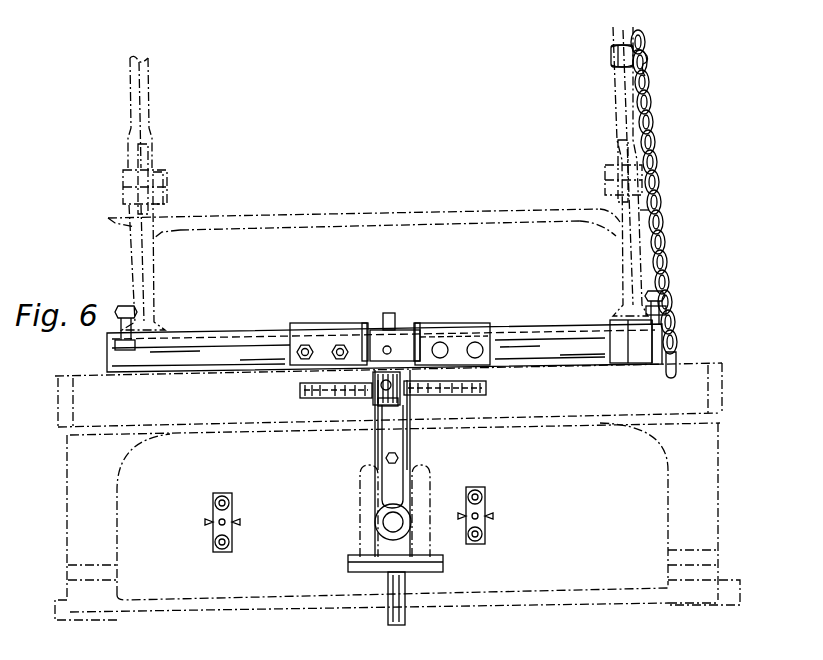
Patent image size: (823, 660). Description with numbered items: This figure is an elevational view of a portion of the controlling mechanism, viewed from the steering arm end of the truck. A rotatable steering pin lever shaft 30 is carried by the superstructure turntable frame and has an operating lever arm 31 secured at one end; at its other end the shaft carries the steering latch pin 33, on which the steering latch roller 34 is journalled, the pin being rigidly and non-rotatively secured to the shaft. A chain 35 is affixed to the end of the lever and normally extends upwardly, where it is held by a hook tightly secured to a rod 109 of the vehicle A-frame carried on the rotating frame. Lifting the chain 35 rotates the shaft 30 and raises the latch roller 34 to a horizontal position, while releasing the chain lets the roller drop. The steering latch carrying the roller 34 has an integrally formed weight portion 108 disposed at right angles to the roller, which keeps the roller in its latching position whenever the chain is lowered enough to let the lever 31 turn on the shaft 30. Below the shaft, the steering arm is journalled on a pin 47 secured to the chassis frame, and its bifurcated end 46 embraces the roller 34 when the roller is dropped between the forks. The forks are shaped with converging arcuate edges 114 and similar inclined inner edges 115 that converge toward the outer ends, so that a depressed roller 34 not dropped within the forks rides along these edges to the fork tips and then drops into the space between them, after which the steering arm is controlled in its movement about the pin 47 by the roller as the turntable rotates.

The steering pin lever shaft 30 is at (543, 366).
The operating lever arm 31 is at (678, 364).
The steering latch pin 33 is at (399, 403).
The steering latch roller 34 is at (375, 396).
The chain 35 is at (660, 181).
The bifurcated end 46 is at (458, 393).
The pin 47 is at (392, 612).
The weight portion 108 is at (387, 344).
The rod 109 is at (620, 97).
The converging arcuate edge 114 is at (300, 390).
The inclined inner edge 115 is at (487, 389).